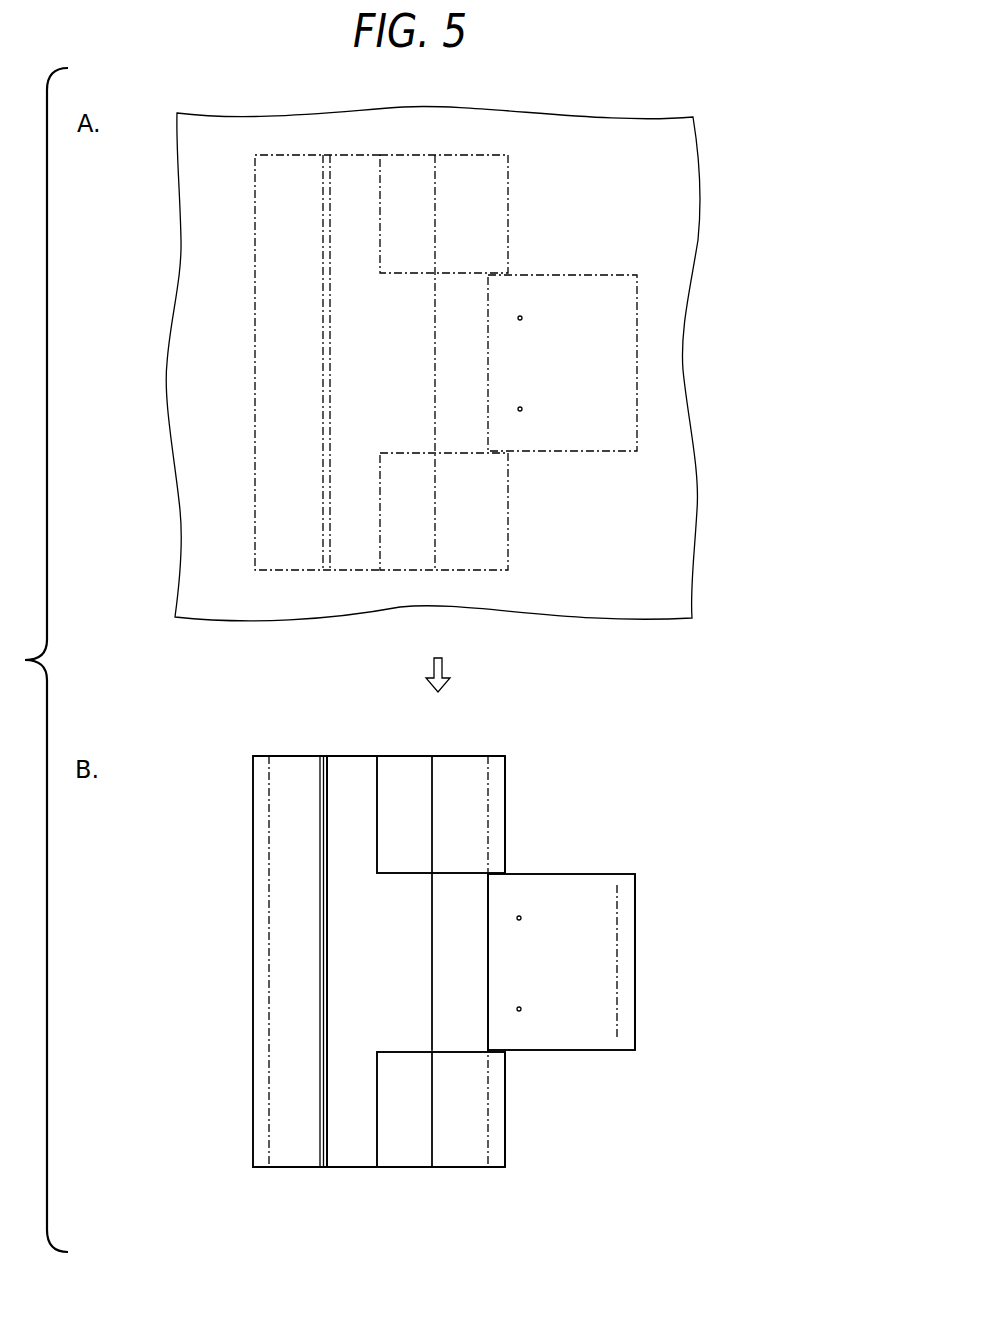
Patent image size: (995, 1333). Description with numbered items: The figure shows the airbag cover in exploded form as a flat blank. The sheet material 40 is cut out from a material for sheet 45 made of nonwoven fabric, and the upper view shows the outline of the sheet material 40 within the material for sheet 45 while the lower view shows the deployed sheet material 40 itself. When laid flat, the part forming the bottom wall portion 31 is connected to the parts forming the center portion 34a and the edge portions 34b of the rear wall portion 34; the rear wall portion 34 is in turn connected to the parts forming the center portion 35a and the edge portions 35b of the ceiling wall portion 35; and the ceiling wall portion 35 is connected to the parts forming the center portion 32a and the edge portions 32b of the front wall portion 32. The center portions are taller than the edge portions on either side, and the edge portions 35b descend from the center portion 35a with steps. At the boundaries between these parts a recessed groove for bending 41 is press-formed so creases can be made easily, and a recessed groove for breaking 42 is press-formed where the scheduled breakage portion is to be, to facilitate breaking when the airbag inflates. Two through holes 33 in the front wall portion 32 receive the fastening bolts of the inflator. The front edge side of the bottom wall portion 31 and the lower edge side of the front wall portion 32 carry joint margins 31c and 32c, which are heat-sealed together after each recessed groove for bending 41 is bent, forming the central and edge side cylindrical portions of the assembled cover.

The material for sheet 45 is at (658, 205).
The sheet material 40 is at (652, 313).
The recessed groove for breaking 42 is at (324, 752).
The recessed groove for bending 41 is at (377, 817).
The bottom wall portion 31 is at (312, 961).
The joint margin 31c is at (262, 1067).
The rear wall portion 34 is at (259, 994).
The center portion 34a is at (400, 935).
The edge portions 34b is at (349, 833).
The front wall portion 32 is at (571, 917).
The center portion 32a is at (585, 897).
The edge portions 32b is at (467, 790).
The joint margin 32c is at (500, 800).
The ceiling wall portion 35 is at (467, 931).
The center portion 35a is at (500, 908).
The edge portions 35b is at (408, 780).
The through hole 33 is at (519, 918).